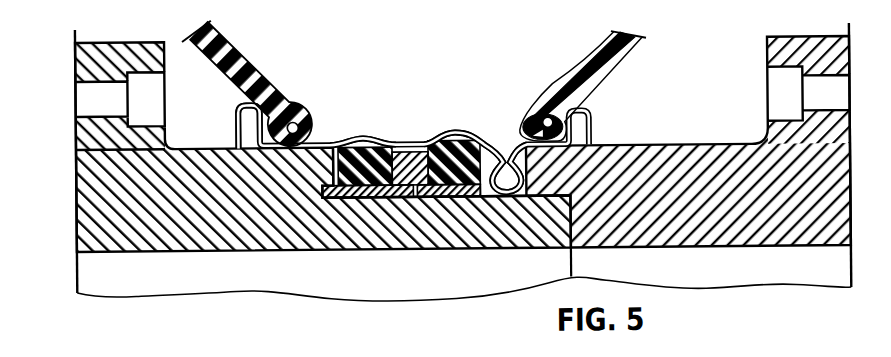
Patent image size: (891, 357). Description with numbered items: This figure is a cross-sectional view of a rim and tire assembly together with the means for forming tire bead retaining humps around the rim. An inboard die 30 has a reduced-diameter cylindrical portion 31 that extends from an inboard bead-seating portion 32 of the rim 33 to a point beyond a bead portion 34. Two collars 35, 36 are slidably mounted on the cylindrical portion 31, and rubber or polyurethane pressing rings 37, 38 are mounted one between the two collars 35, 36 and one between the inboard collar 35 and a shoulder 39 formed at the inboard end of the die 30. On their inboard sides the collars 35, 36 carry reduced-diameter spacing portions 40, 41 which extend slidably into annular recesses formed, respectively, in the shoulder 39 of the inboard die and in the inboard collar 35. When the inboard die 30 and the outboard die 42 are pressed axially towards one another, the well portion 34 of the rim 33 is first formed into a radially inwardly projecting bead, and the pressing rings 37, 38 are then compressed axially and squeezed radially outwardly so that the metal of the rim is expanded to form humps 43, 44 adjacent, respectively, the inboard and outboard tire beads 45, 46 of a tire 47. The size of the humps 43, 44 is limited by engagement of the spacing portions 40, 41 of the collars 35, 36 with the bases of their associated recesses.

The inboard die 30 is at (239, 257).
The reduced-diameter cylindrical portion 31 is at (498, 244).
The inboard bead-seating portion 32 is at (262, 149).
The rim 33 is at (401, 136).
The bead portion 34 is at (509, 198).
The inboard collar 35 is at (367, 196).
The outboard collar 36 is at (476, 194).
The pressing ring 37 is at (395, 156).
The pressing ring 38 is at (460, 151).
The shoulder 39 is at (323, 152).
The spacing portion 40 is at (337, 200).
The spacing portion 41 is at (420, 194).
The outboard die 42 is at (705, 261).
The hump 43 is at (362, 138).
The hump 44 is at (453, 133).
The inboard tire bead 45 is at (312, 150).
The outboard tire bead 46 is at (530, 121).
The tire 47 is at (263, 71).